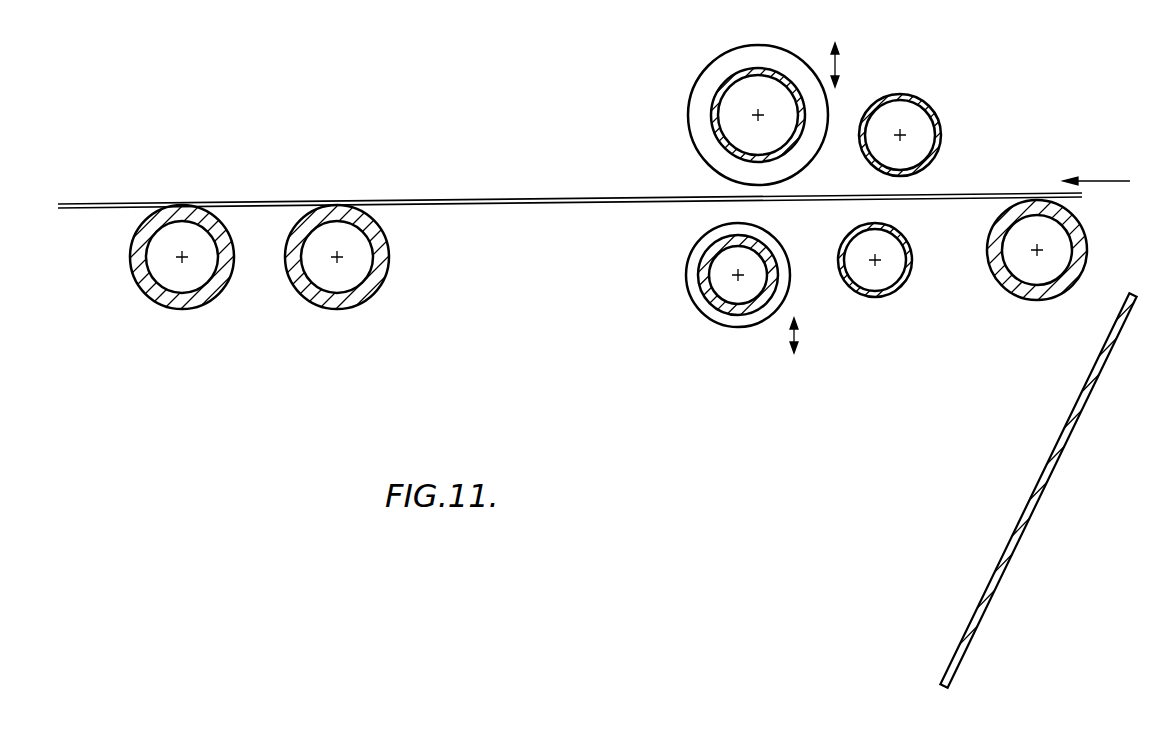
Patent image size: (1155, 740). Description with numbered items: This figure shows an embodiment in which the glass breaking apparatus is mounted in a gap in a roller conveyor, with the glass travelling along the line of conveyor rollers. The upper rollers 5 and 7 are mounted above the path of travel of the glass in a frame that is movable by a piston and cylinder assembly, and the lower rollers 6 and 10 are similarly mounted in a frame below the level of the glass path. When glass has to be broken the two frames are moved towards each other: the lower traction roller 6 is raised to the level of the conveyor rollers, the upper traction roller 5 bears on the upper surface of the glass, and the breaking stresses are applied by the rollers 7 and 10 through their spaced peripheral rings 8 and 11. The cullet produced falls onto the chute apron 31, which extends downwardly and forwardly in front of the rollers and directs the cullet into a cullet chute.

The upper traction roller 5 is at (938, 126).
The lower traction roller 6 is at (888, 296).
The upper roller 7 is at (713, 104).
The peripheral ring 8 is at (698, 83).
The lower roller 10 is at (731, 309).
The peripheral ring 11 is at (698, 299).
The chute apron 31 is at (1040, 473).